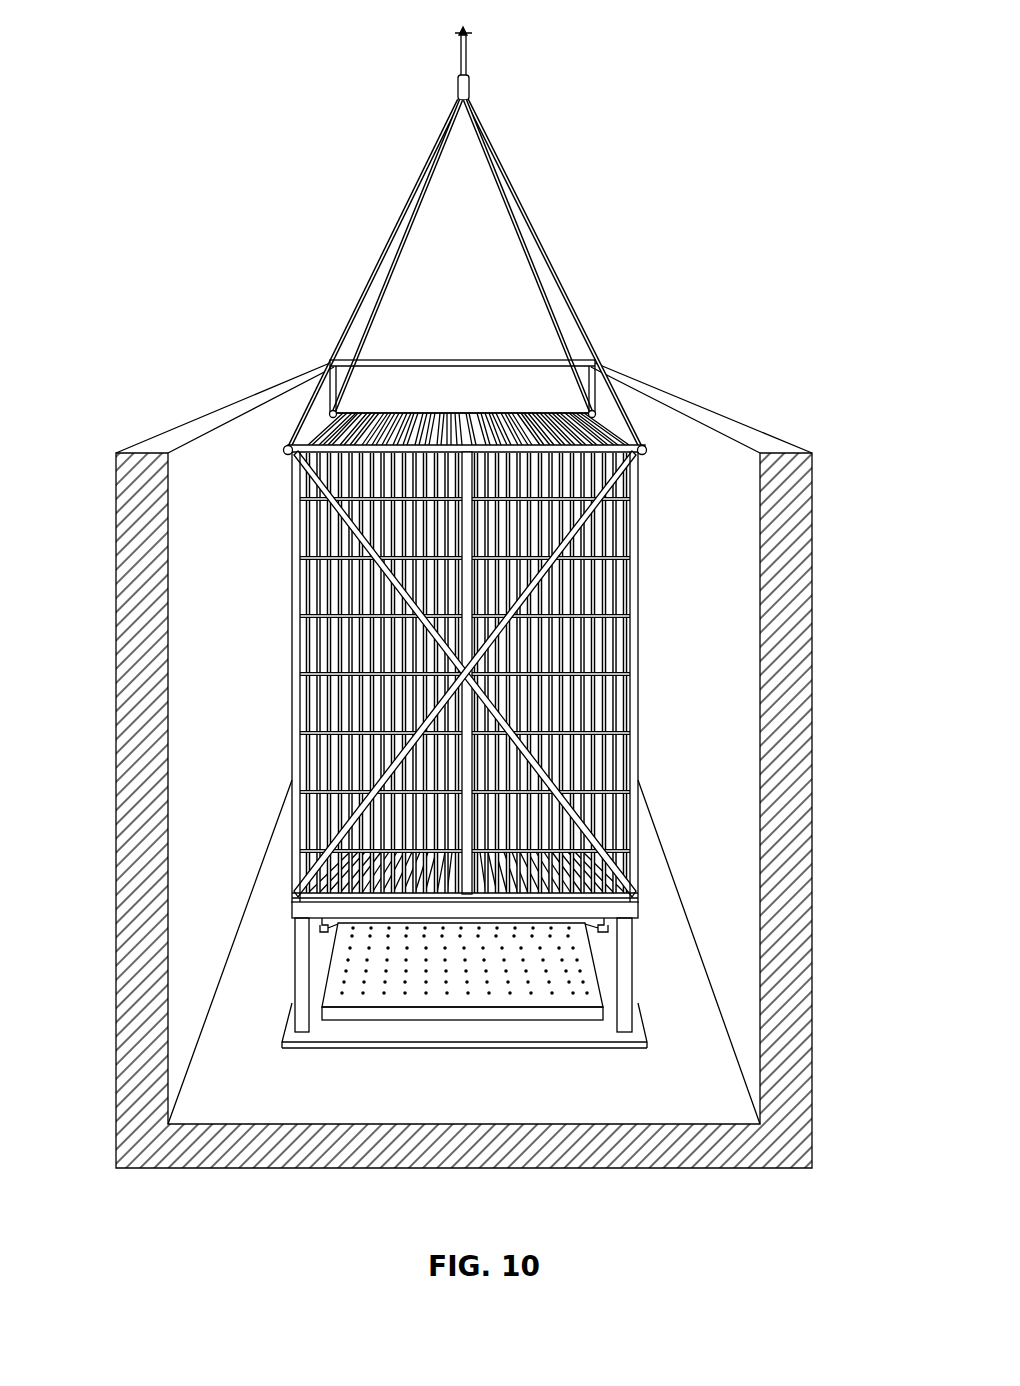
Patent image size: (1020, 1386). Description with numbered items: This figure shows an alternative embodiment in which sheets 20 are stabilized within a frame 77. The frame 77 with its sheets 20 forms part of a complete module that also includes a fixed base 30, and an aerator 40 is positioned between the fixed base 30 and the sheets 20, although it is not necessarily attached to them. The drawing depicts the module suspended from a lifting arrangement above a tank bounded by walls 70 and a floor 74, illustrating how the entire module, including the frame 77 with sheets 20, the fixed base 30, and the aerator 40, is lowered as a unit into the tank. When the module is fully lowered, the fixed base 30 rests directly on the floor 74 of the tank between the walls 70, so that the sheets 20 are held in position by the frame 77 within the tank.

The sheet 20 is at (332, 418).
The frame 77 is at (297, 648).
The walls 70 is at (739, 748).
The floor 74 is at (303, 1090).
The fixed base 30 is at (640, 1032).
The aerator 40 is at (512, 1012).